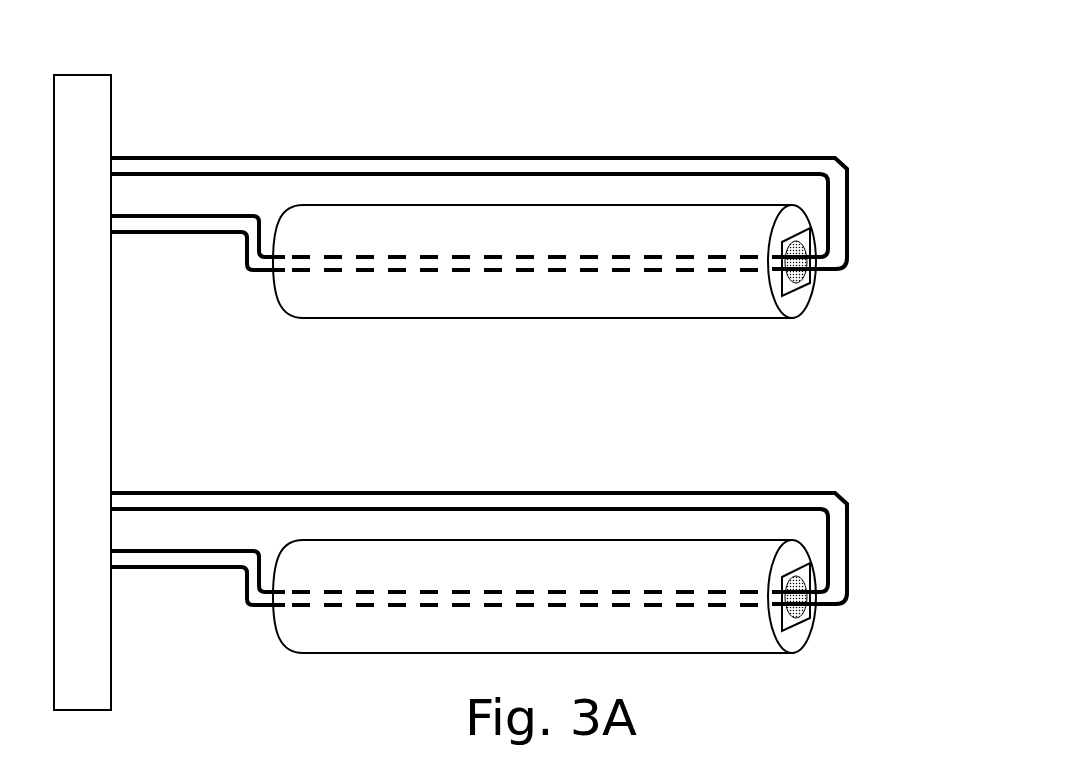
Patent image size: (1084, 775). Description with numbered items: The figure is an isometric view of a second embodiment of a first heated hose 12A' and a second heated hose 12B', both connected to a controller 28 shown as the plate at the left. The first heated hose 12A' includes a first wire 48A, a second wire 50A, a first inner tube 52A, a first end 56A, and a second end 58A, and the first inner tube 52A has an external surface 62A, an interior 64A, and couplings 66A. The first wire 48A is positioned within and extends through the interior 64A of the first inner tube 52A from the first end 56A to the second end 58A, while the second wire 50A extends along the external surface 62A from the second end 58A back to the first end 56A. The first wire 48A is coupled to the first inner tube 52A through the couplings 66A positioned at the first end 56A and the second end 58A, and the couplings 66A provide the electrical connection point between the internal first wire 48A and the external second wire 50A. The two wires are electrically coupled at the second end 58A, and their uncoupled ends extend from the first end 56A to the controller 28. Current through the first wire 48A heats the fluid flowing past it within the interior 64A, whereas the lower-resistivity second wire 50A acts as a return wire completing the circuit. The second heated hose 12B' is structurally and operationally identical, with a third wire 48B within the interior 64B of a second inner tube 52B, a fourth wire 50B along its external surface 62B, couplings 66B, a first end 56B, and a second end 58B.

The controller 28 is at (98, 392).
The first heated hose 12A' is at (536, 189).
The second heated hose 12B' is at (532, 541).
The second wire 50A is at (253, 165).
The fourth wire 50B is at (253, 500).
The first wire 48A is at (213, 223).
The third wire 48B is at (213, 558).
The first end 56A is at (262, 282).
The first end 56B is at (270, 628).
The first inner tube 52A is at (552, 270).
The second inner tube 52B is at (547, 622).
The external surface 62A is at (717, 303).
The external surface 62B is at (667, 635).
The second end 58A is at (805, 315).
The second end 58B is at (768, 658).
The interior 64A is at (812, 273).
The interior 64B is at (810, 613).
The couplings 66A is at (812, 235).
The couplings 66B is at (813, 612).